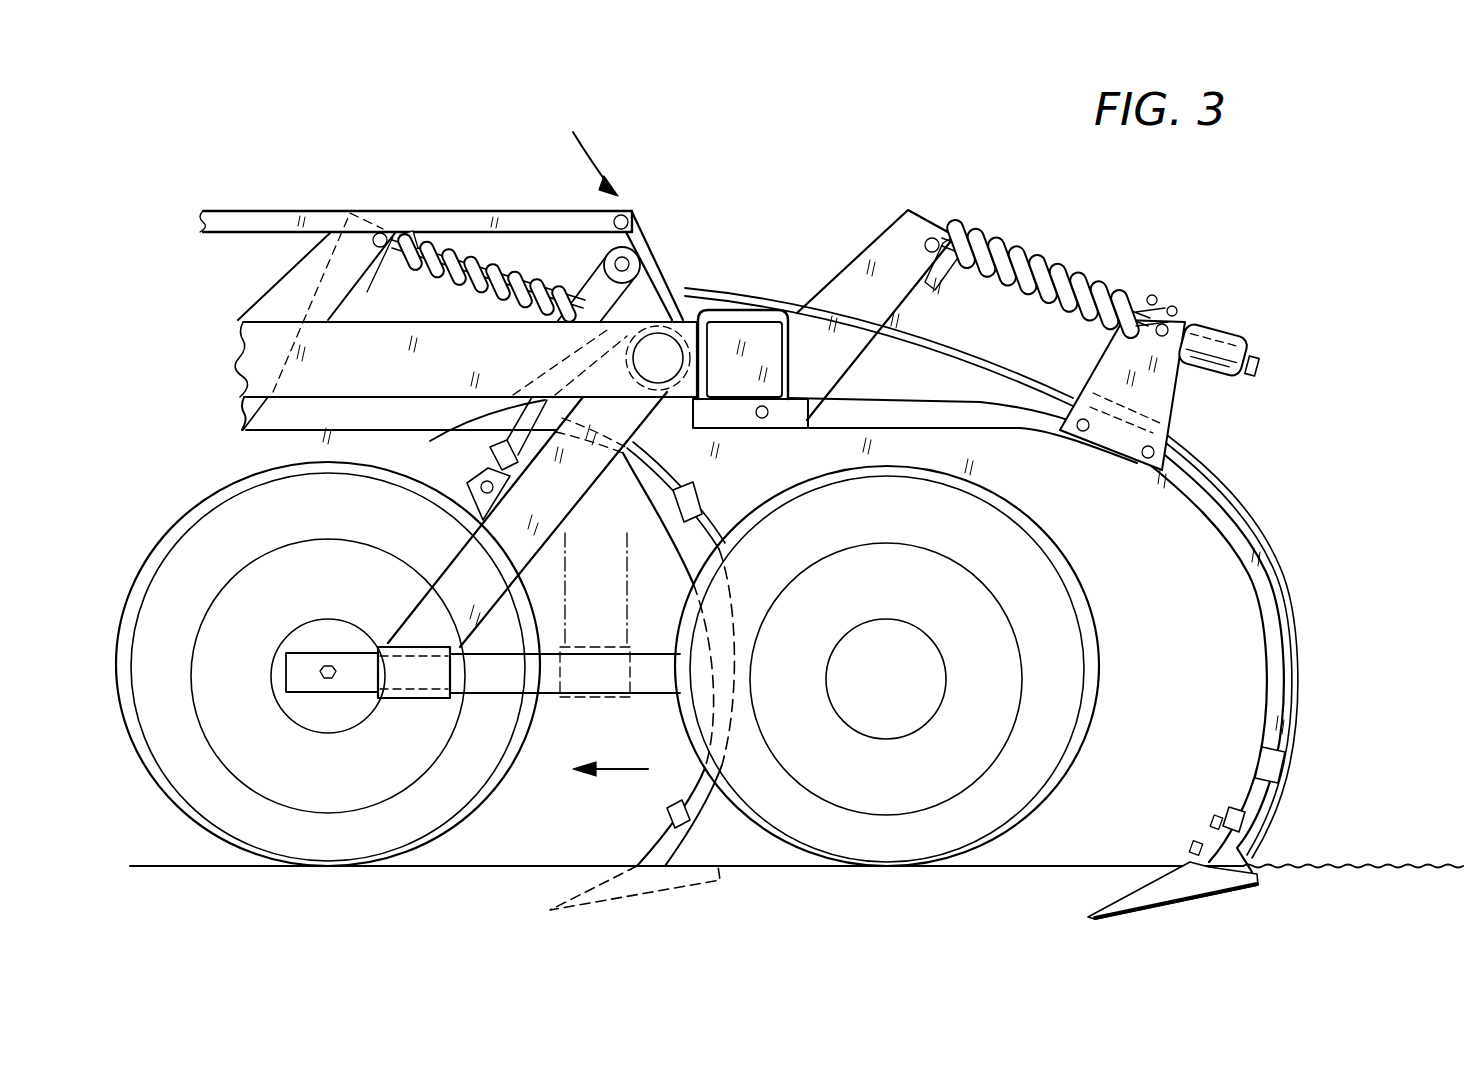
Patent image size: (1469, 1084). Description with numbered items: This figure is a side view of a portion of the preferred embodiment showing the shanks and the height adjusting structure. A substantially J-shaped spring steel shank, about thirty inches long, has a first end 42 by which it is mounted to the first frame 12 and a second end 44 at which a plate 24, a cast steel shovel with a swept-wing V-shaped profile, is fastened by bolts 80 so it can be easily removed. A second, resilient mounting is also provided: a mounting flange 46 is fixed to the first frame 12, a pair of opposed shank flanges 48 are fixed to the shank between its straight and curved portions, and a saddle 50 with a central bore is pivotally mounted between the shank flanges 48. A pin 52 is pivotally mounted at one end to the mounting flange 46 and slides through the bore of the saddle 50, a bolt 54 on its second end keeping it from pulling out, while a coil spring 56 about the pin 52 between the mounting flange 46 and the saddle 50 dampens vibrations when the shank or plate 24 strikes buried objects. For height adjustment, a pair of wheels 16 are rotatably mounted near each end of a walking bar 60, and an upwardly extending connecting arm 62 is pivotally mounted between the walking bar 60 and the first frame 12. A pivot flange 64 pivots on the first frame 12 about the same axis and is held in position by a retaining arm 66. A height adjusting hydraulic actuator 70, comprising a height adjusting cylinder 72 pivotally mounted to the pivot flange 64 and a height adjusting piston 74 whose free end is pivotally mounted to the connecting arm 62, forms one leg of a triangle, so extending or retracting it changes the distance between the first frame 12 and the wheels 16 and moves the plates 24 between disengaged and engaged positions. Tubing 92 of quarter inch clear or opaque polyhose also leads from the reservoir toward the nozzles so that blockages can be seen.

The first frame 12 is at (413, 337).
The wheels 16 is at (325, 850).
The plate 24 is at (1183, 885).
The first end 42 is at (830, 405).
The second end 44 is at (1247, 790).
The mounting flange 46 is at (873, 260).
The shank flanges 48 is at (1163, 410).
The saddle 50 is at (1210, 337).
The pin 52 is at (1120, 305).
The bolt 54 is at (1258, 372).
The coil spring 56 is at (1093, 273).
The walking bar 60 is at (543, 686).
The connecting arm 62 is at (523, 543).
The pivot flange 64 is at (645, 280).
The retaining arm 66 is at (483, 218).
The height adjusting hydraulic actuator 70 is at (545, 357).
The height adjusting cylinder 72 is at (593, 282).
The height adjusting piston 74 is at (525, 430).
The bolts 80 is at (1192, 845).
The tubing 92 is at (1292, 672).